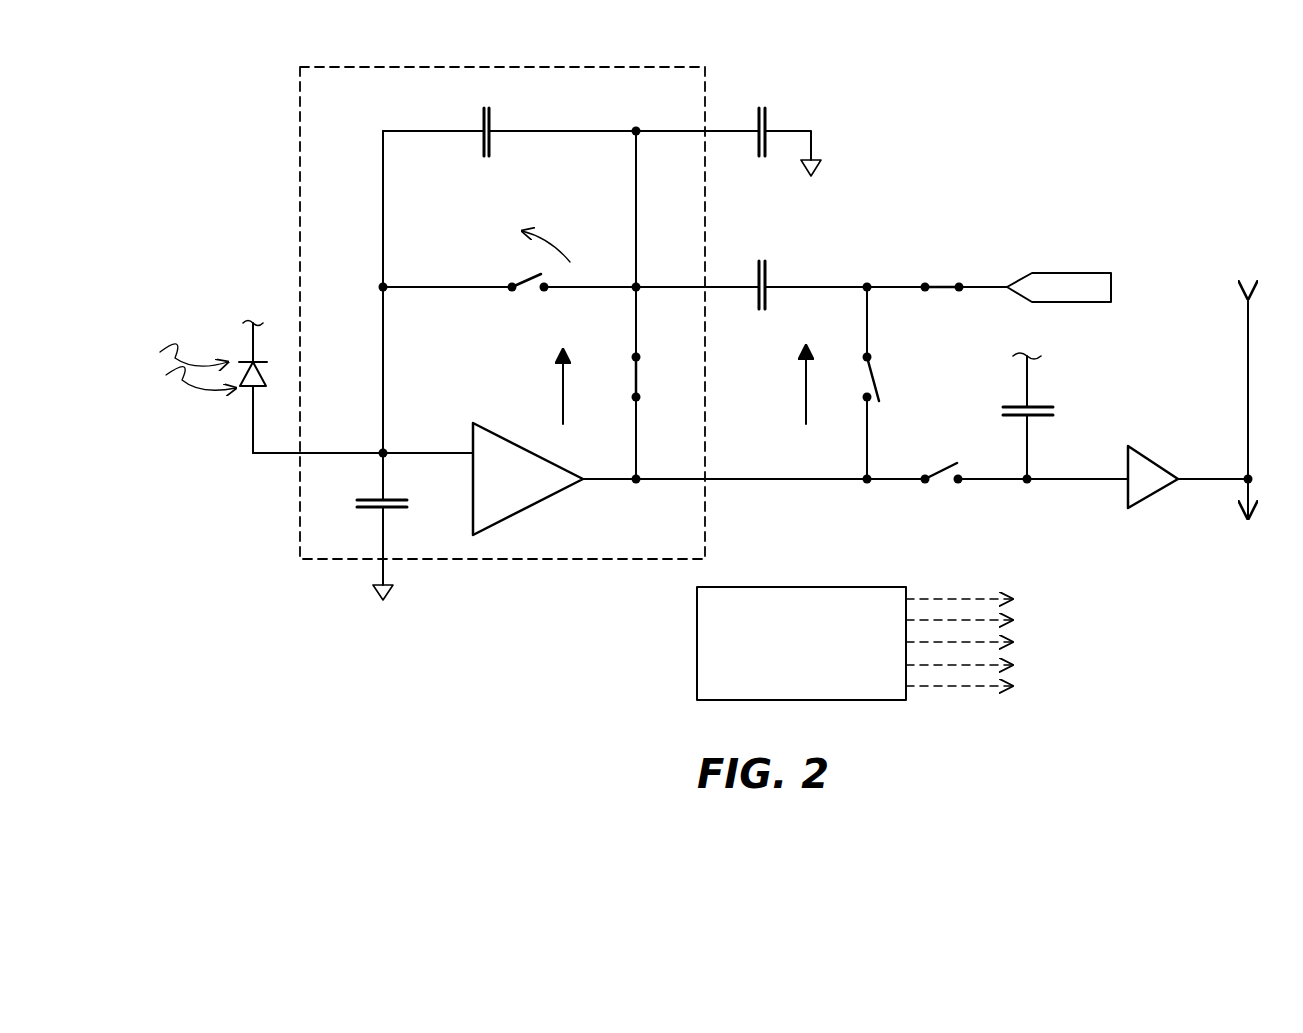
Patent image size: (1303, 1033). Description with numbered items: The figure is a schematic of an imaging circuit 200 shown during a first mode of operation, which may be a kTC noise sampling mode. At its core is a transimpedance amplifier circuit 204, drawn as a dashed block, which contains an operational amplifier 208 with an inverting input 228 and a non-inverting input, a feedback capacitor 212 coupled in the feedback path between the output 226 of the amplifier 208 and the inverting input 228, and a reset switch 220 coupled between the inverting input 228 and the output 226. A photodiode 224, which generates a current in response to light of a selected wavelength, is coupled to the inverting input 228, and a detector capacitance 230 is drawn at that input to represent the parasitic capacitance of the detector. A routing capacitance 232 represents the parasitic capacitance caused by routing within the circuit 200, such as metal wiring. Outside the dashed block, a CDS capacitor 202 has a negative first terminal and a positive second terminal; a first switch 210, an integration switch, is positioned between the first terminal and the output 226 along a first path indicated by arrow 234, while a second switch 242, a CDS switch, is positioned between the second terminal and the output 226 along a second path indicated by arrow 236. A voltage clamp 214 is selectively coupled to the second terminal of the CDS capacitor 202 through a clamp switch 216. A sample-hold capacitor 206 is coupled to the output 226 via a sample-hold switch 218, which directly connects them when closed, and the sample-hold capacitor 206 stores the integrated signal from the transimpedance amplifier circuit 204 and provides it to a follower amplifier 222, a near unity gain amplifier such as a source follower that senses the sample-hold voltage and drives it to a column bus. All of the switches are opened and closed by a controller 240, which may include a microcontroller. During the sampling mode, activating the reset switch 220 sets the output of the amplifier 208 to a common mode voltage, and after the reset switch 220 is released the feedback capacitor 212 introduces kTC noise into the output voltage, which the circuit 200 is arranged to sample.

The imaging circuit 200 is at (1025, 170).
The CDS capacitor 202 is at (768, 270).
The transimpedance amplifier circuit 204 is at (710, 71).
The sample-hold capacitor 206 is at (1040, 407).
The operational amplifier 208 is at (551, 497).
The first switch 210 is at (638, 381).
The feedback capacitor 212 is at (484, 115).
The voltage clamp 214 is at (1085, 272).
The clamp switch 216 is at (945, 292).
The sample-hold switch 218 is at (945, 485).
The reset switch 220 is at (524, 293).
The follower amplifier 222 is at (1148, 496).
The photodiode 224 is at (250, 388).
The output of the amplifier 226 is at (778, 482).
The inverting input 228 is at (278, 455).
The Cdet 230 is at (366, 508).
The Cpar 232 is at (766, 123).
The arrow 234 is at (563, 389).
The arrow 236 is at (806, 389).
The controller 240 is at (872, 587).
The second switch 242 is at (880, 386).